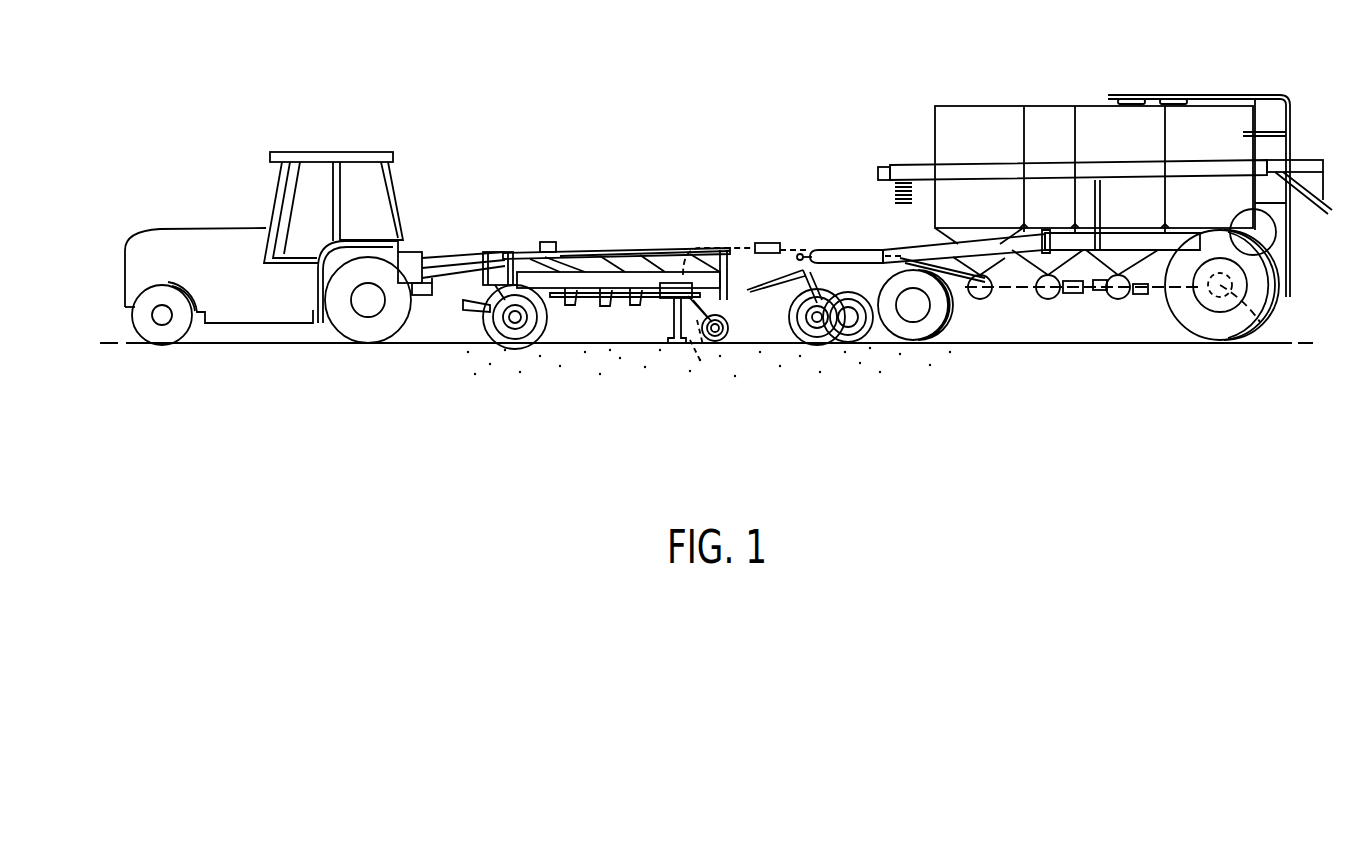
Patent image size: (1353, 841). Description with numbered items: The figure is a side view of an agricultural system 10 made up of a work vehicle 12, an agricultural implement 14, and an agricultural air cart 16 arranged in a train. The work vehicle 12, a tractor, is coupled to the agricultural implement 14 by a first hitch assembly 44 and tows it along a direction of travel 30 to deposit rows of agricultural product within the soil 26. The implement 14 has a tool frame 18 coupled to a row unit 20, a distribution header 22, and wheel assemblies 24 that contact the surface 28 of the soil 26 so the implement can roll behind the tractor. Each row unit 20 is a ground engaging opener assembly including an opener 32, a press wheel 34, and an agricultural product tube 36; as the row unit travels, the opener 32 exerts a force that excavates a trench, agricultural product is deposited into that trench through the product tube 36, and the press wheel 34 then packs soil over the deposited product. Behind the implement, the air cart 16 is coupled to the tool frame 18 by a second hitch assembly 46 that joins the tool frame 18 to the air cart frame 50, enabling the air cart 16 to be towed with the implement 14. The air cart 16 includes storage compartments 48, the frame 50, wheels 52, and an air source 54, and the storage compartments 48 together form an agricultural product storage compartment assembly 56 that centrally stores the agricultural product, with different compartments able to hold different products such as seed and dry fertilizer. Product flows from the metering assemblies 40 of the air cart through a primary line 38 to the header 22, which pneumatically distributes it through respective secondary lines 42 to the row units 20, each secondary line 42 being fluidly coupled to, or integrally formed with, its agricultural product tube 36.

The agricultural system 10 is at (712, 88).
The work vehicle 12 is at (326, 136).
The agricultural implement 14 is at (647, 208).
The agricultural air cart 16 is at (1088, 88).
The tool frame 18 is at (667, 267).
The row unit 20 is at (660, 323).
The distribution header 22 is at (767, 242).
The wheel assemblies 24 is at (503, 343).
The soil 26 is at (923, 450).
The surface 28 is at (1073, 343).
The direction of travel 30 is at (740, 152).
The opener 32 is at (678, 343).
The press wheel 34 is at (728, 328).
The agricultural product tube 36 is at (701, 335).
The primary line 38 is at (1023, 294).
The metering assembly 40 is at (985, 298).
The secondary line 42 is at (725, 245).
The first hitch assembly 44 is at (450, 257).
The second hitch assembly 46 is at (801, 254).
The storage compartments 48 is at (1072, 97).
The air cart frame 50 is at (930, 243).
The wheels 52 is at (960, 320).
The air source 54 is at (1270, 238).
The agricultural product storage compartment assembly 56 is at (1142, 66).